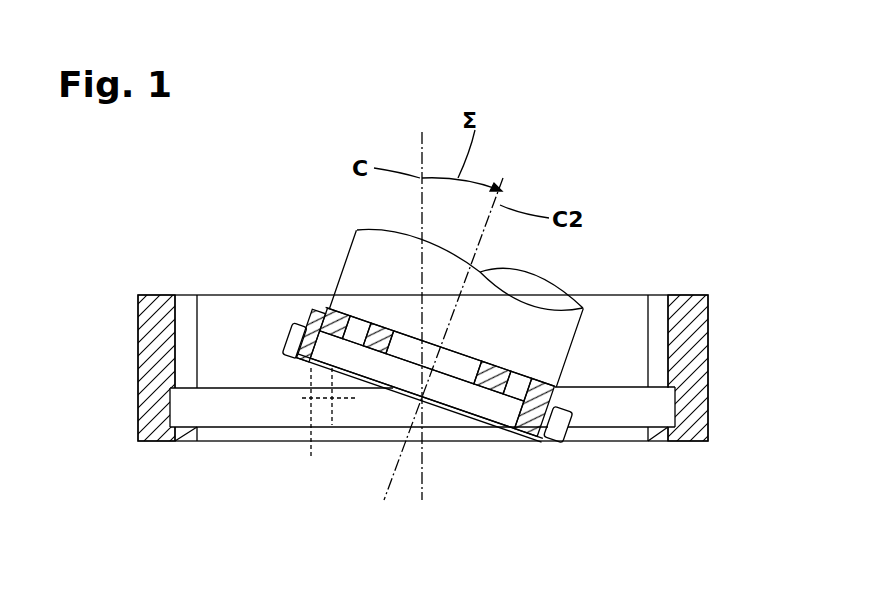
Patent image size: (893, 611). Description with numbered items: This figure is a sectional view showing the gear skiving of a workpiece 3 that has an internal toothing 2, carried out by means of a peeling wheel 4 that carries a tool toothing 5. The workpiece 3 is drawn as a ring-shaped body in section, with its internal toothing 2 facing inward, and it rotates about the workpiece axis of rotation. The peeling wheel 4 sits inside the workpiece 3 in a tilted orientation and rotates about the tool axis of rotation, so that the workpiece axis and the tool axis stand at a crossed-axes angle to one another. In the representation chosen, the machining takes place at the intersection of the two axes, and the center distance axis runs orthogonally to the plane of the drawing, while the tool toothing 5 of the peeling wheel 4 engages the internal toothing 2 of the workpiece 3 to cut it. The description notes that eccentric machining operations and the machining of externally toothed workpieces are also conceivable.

The internal toothing 2 is at (188, 300).
The workpiece 3 is at (690, 262).
The peeling wheel 4 is at (334, 252).
The tool toothing 5 is at (555, 444).